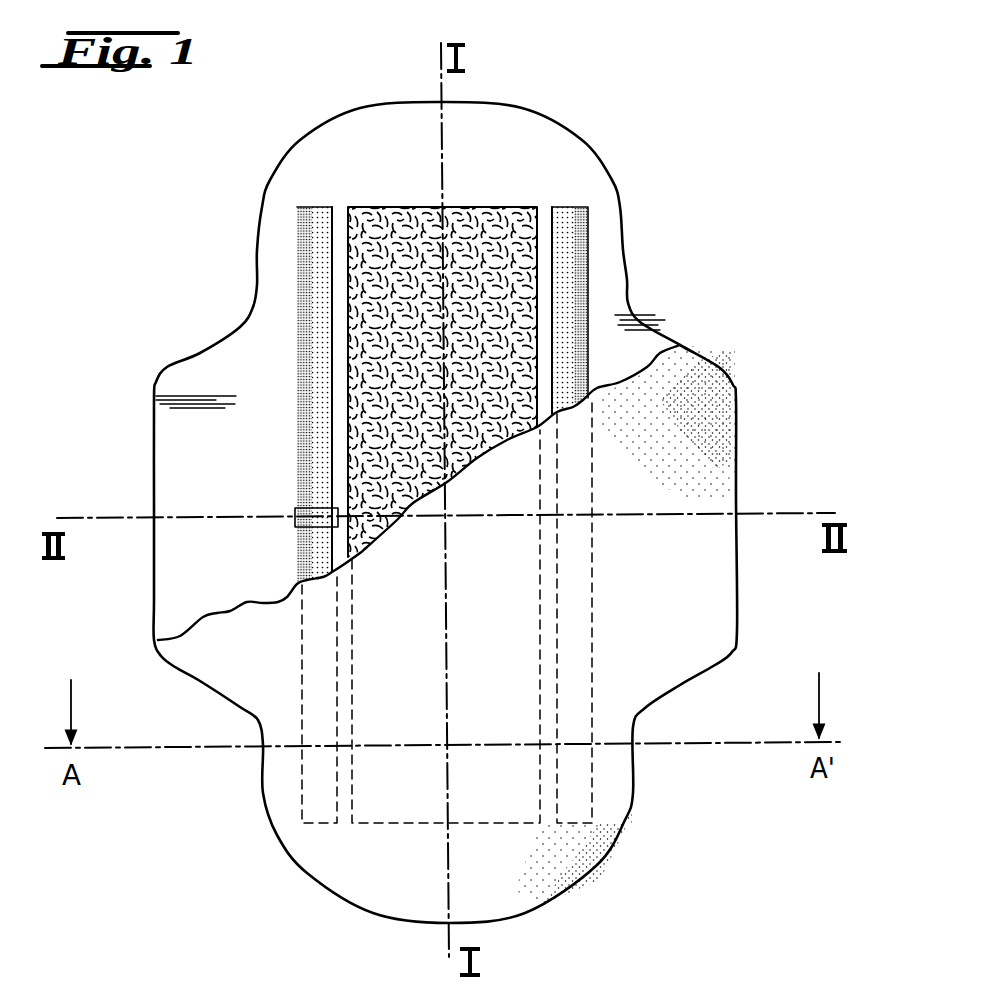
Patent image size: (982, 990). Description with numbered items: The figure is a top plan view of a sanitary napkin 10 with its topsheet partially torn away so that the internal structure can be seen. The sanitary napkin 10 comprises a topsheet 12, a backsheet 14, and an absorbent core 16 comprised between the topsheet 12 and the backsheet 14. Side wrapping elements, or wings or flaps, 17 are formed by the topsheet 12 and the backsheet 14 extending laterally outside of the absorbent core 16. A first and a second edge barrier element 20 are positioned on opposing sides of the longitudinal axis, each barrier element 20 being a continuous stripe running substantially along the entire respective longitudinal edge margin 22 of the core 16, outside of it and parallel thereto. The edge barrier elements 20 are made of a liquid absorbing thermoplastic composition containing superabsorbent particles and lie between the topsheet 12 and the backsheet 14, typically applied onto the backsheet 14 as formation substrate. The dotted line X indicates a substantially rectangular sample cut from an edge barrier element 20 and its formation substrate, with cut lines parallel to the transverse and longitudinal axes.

The sanitary napkin 10 is at (616, 67).
The topsheet 12 is at (527, 860).
The backsheet 14 is at (605, 272).
The absorbent core 16 is at (484, 216).
The side wrapping elements 17 is at (177, 430).
The edge barrier element 20 is at (310, 343).
The longitudinal edge margin 22 is at (345, 242).
The dotted line X is at (315, 505).